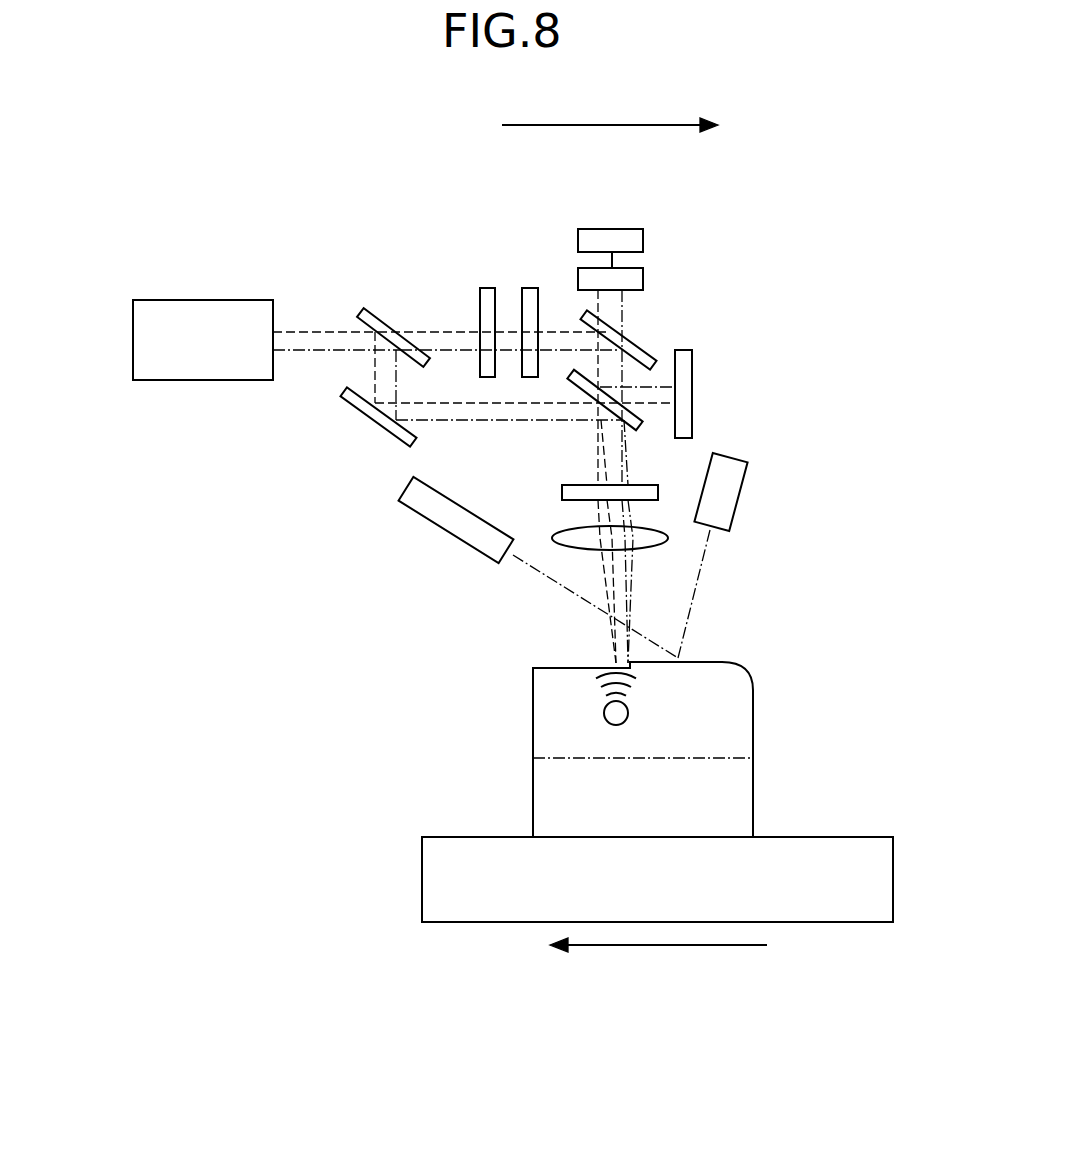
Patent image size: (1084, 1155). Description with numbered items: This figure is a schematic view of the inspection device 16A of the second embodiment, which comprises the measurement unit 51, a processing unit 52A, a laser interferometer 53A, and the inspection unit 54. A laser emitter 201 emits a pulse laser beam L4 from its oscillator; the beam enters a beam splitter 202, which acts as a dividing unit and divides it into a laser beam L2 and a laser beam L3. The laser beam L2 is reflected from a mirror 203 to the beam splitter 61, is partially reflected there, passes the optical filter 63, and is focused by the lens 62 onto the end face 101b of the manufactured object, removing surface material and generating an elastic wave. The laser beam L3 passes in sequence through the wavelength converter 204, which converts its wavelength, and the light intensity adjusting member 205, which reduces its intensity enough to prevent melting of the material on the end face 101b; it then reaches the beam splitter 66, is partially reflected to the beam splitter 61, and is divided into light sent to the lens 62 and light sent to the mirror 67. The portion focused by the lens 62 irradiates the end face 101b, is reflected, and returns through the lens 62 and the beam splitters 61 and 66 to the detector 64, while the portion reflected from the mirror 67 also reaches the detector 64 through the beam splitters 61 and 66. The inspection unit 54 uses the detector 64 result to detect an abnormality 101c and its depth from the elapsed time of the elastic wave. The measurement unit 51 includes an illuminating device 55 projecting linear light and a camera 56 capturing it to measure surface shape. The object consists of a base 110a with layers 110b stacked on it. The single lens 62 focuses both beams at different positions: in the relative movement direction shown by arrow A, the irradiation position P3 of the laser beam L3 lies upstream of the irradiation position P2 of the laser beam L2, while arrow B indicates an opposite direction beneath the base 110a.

The inspection device 16A is at (740, 255).
The processing unit 52A is at (118, 326).
The laser interferometer 53A is at (685, 287).
The laser emitter 201 is at (145, 381).
The beam splitter 202 is at (368, 301).
The mirror 203 is at (358, 408).
The wavelength converter 204 is at (488, 288).
The light intensity adjusting member 205 is at (529, 288).
The inspection unit 54 is at (625, 229).
The detector 64 is at (644, 280).
The beam splitter 66 is at (632, 340).
The beam splitter 61 is at (646, 430).
The mirror 67 is at (693, 370).
The optical filter 63 is at (562, 491).
The lens 62 is at (588, 528).
The measurement unit 51 is at (737, 448).
The illuminating device 55 is at (742, 490).
The camera 56 is at (423, 522).
The laser beam L2 is at (367, 363).
The laser beam L3 is at (436, 325).
The laser beam L4 is at (290, 327).
The irradiation position P2 is at (634, 661).
The irradiation position P3 is at (608, 664).
The end face 101b is at (725, 662).
The abnormality 101c is at (604, 713).
The layer 110b is at (754, 713).
The base 110a is at (456, 838).
The arrow A is at (610, 106).
The chuck table moving direction B is at (658, 969).